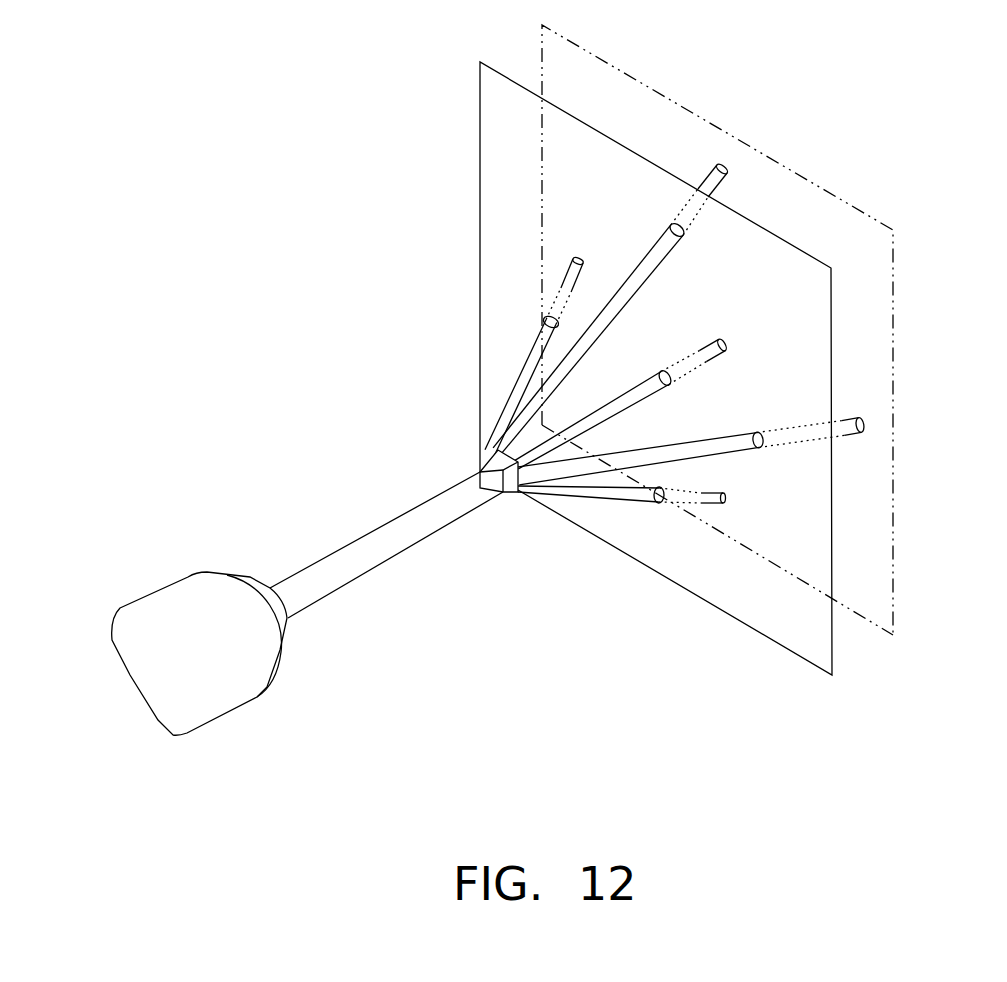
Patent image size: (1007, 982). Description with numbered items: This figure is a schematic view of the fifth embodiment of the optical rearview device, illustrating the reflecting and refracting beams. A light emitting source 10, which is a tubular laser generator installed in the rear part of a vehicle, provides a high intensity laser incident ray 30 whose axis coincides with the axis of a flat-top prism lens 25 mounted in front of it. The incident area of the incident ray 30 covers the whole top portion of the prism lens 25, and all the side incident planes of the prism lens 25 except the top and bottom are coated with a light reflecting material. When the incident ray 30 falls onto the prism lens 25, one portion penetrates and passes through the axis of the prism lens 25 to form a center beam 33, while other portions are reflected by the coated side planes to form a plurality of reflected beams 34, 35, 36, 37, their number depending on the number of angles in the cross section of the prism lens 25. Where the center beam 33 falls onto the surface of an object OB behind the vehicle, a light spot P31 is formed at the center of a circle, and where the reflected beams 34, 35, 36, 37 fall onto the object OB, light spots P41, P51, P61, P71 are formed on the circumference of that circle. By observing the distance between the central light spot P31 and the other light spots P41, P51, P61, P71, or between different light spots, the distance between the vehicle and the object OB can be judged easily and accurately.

The light emitting source 10 is at (242, 693).
The prism lens 25 is at (483, 467).
The incident ray 30 is at (353, 575).
The center beam 33 is at (633, 385).
The reflected beam 34 is at (582, 493).
The reflected beam 35 is at (727, 450).
The reflected beam 36 is at (647, 267).
The reflected beam 37 is at (523, 380).
The light spot P31 is at (668, 385).
The light spot P41 is at (658, 500).
The light spot P51 is at (765, 450).
The light spot P61 is at (672, 230).
The light spot P71 is at (547, 320).
The object OB is at (790, 637).